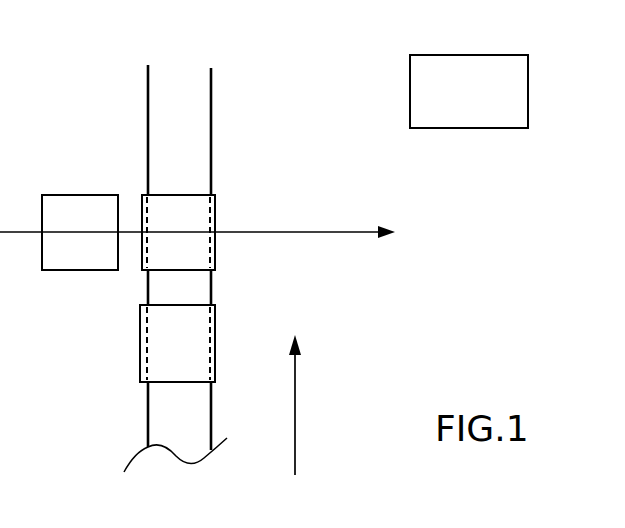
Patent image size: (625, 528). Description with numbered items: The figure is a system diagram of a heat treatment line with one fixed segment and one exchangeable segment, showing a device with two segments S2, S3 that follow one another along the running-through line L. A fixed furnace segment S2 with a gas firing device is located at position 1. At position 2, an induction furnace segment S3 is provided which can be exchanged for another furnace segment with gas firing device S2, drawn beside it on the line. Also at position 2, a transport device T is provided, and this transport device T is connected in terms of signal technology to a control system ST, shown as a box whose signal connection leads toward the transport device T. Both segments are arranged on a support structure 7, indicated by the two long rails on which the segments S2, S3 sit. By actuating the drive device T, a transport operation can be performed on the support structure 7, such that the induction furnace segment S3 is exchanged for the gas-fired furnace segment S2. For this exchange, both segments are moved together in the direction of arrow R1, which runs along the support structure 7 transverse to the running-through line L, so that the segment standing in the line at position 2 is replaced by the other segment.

The position 1 is at (68, 474).
The position 2 is at (175, 464).
The support structure 7 is at (206, 101).
The transport device T is at (218, 141).
The control system ST is at (295, 119).
The furnace segment with gas firing device S2 is at (128, 288).
The induction furnace segment S3 is at (178, 232).
The running-through line L is at (207, 232).
The direction of arrow R1 is at (309, 405).